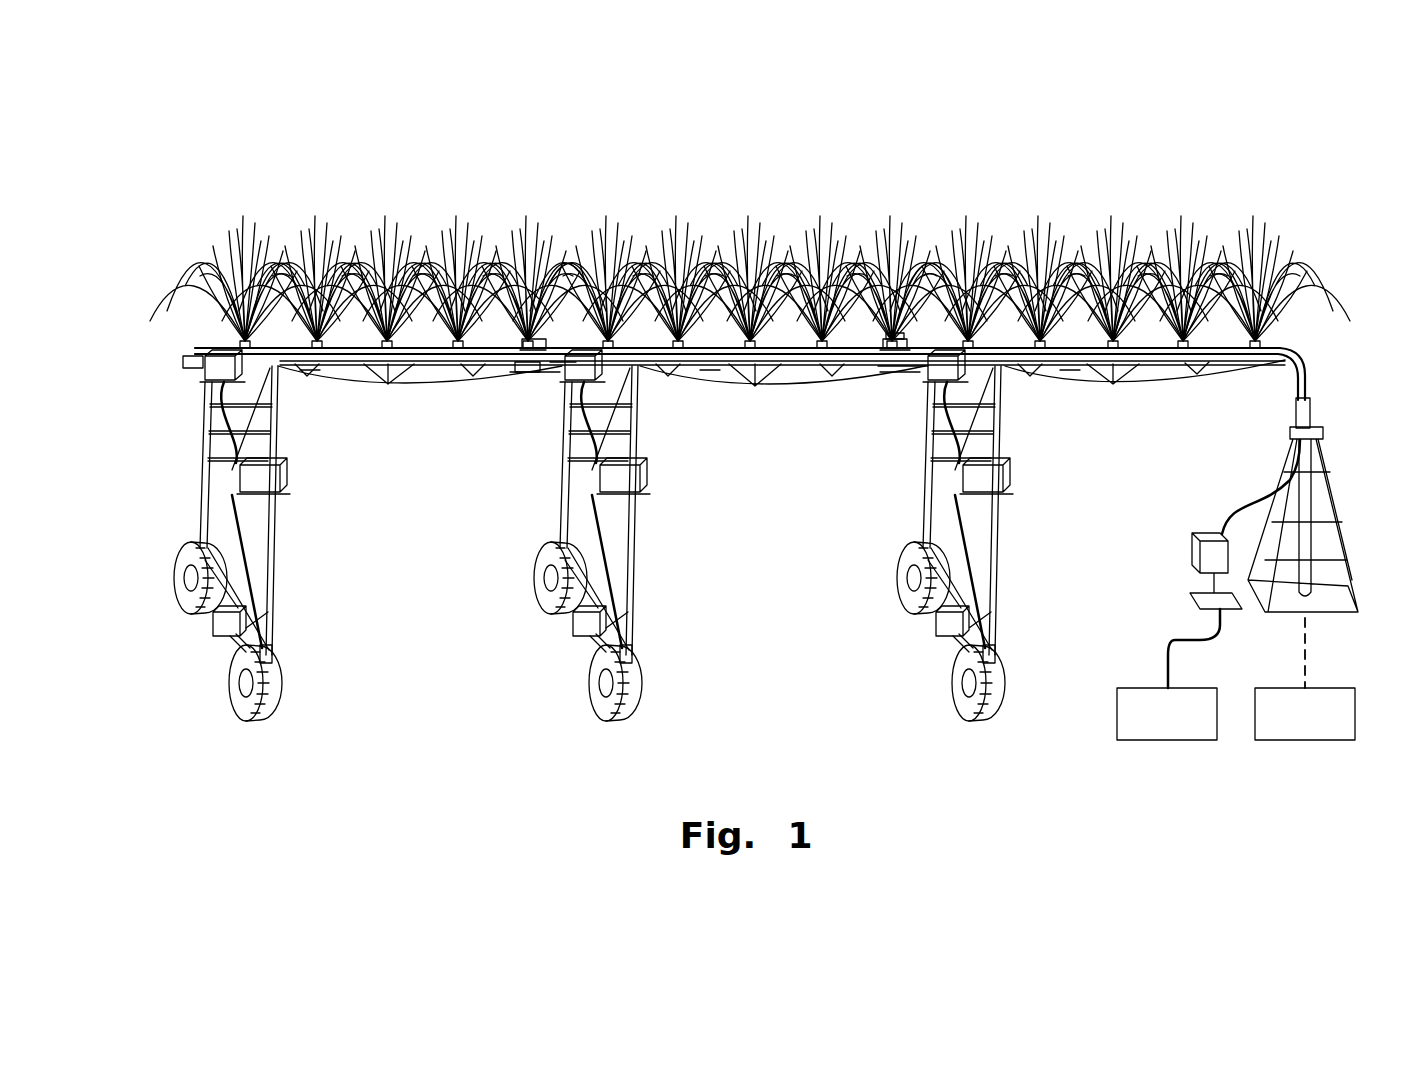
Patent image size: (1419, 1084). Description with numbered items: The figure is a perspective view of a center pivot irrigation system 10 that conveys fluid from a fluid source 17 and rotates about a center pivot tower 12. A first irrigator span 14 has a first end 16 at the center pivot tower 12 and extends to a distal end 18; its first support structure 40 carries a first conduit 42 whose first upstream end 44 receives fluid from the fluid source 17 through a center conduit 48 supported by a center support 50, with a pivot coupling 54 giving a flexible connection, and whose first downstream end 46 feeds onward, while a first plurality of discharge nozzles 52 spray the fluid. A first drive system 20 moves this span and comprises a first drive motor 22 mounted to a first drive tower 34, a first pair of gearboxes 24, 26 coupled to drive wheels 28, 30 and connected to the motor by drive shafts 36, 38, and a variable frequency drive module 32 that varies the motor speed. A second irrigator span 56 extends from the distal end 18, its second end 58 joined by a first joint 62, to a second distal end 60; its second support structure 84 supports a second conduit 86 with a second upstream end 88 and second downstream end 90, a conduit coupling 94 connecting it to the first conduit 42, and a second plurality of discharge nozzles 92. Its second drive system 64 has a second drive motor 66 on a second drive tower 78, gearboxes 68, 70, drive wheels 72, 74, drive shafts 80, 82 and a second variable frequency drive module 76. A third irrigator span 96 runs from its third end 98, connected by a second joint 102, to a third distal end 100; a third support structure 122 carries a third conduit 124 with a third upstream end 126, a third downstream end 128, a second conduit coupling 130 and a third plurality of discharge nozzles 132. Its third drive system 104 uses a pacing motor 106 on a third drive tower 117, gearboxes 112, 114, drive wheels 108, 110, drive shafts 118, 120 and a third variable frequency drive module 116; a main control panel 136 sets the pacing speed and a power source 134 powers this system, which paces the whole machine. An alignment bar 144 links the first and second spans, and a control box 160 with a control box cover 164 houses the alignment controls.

The irrigation system 10 is at (1073, 183).
The center pivot tower 12 is at (1340, 378).
The first irrigator span 14 is at (1143, 400).
The first end 16 is at (1262, 338).
The fluid source 17 is at (1302, 742).
The distal end 18 is at (906, 387).
The first drive system 20 is at (1036, 510).
The first drive motor 22 is at (910, 614).
The first gearbox 24 is at (1026, 638).
The first gearbox 26 is at (999, 470).
The drive wheel 28 is at (938, 690).
The drive wheel 30 is at (882, 578).
The variable frequency drive module 32 is at (1020, 483).
The first drive tower 34 is at (1003, 419).
The first drive shaft 36 is at (915, 598).
The first drive shaft 38 is at (904, 599).
The first support structure 40 is at (1108, 394).
The first conduit 42 is at (1085, 338).
The first upstream end 44 is at (1308, 346).
The first downstream end 46 is at (916, 344).
The center conduit 48 is at (1322, 470).
The center support 50 is at (1265, 505).
The first plurality of discharge nozzles 52 is at (1030, 338).
The pivot coupling 54 is at (1296, 416).
The second irrigator span 56 is at (758, 392).
The second end 58 is at (835, 338).
The second distal end 60 is at (557, 405).
The first joint 62 is at (905, 334).
The second drive system 64 is at (669, 510).
The second drive motor 66 is at (637, 594).
The second gearbox 68 is at (665, 673).
The second gearbox 70 is at (634, 467).
The drive wheel 72 is at (573, 687).
The drive wheel 74 is at (513, 578).
The second variable frequency drive module 76 is at (560, 479).
The second drive tower 78 is at (644, 419).
The second drive shaft 80 is at (641, 573).
The second drive shaft 82 is at (638, 599).
The second support structure 84 is at (800, 402).
The second conduit 86 is at (760, 338).
The second upstream end 88 is at (892, 338).
The second downstream end 90 is at (546, 349).
The second plurality of discharge nozzles 92 is at (712, 338).
The conduit coupling 94 is at (899, 338).
The third irrigator span 96 is at (376, 388).
The third end 98 is at (515, 343).
The third distal end 100 is at (202, 372).
The second joint 102 is at (540, 338).
The third drive system 104 is at (295, 505).
The pacing motor 106 is at (228, 612).
The drive wheel 108 is at (267, 705).
The drive wheel 110 is at (207, 572).
The third gearbox 112 is at (268, 664).
The third gearbox 114 is at (215, 557).
The third variable frequency drive module 116 is at (280, 478).
The third drive tower 117 is at (298, 446).
The third drive shaft 118 is at (224, 640).
The third drive shaft 120 is at (197, 616).
The third support structure 122 is at (405, 400).
The third conduit 124 is at (380, 336).
The third upstream end 126 is at (532, 339).
The third downstream end 128 is at (182, 338).
The second conduit coupling 130 is at (494, 390).
The third plurality of discharge nozzles 132 is at (288, 335).
The power source 134 is at (1150, 742).
The main control panel 136 is at (1222, 612).
The alignment bar 144 is at (528, 376).
The control box 160 is at (968, 338).
The control box cover 164 is at (605, 372).